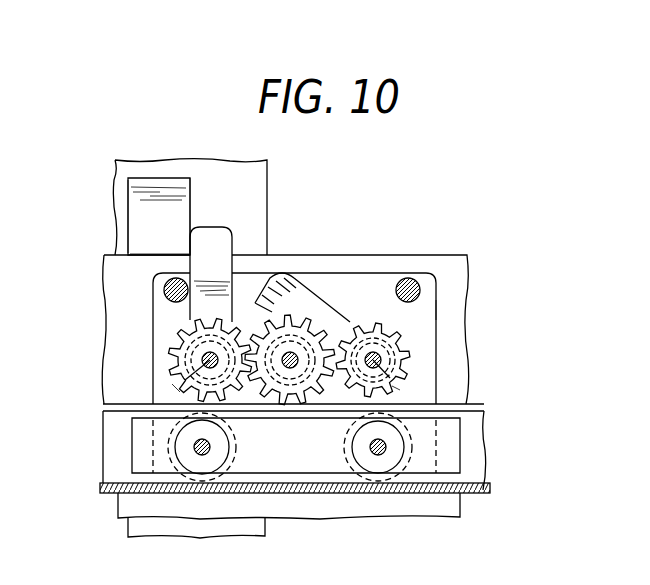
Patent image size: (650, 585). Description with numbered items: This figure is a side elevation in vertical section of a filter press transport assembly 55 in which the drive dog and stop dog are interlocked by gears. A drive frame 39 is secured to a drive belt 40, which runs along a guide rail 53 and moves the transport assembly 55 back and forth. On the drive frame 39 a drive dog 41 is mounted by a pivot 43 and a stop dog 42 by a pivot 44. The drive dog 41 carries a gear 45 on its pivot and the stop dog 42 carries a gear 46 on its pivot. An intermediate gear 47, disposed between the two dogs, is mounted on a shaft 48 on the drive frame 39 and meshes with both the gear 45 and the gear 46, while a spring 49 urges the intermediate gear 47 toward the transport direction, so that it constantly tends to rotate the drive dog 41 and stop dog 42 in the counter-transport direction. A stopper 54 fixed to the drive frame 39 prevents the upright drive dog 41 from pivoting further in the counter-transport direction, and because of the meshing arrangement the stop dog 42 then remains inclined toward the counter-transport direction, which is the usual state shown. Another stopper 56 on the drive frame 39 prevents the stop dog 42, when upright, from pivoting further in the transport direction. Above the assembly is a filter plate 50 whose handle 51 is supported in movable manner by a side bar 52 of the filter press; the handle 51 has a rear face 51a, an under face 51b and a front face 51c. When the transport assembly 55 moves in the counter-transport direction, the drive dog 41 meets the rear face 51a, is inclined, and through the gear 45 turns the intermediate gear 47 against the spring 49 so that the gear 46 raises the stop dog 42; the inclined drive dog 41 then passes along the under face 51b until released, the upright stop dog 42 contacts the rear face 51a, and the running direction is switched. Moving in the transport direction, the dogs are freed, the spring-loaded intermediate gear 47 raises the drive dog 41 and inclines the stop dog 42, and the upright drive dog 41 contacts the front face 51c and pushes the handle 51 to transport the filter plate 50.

The drive frame 39 is at (436, 308).
The drive belt 40 is at (455, 445).
The drive dog 41 is at (228, 229).
The stop dog 42 is at (315, 292).
The pivot 43 is at (176, 387).
The pivot 44 is at (397, 388).
The gear 45 is at (172, 346).
The gear 46 is at (415, 352).
The intermediate gear 47 is at (323, 394).
The shaft 48 is at (291, 370).
The spring 49 is at (235, 444).
The filter plate 50 is at (267, 197).
The handle 51 is at (165, 187).
The rear face 51a is at (194, 226).
The under face 51b is at (160, 256).
The front face 51c is at (128, 217).
The side bar 52 is at (447, 262).
The guide rail 53 is at (107, 495).
The stopper 54 is at (164, 292).
The transport assembly 55 is at (305, 270).
The stopper 56 is at (396, 290).